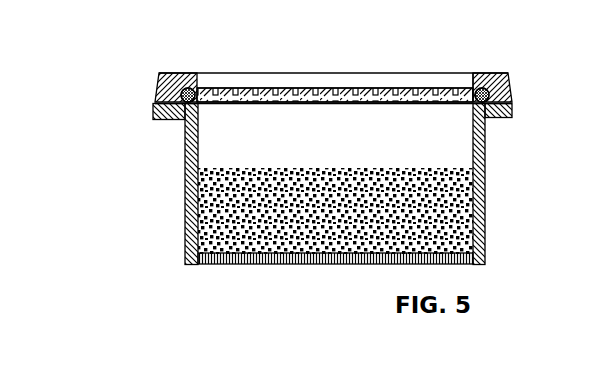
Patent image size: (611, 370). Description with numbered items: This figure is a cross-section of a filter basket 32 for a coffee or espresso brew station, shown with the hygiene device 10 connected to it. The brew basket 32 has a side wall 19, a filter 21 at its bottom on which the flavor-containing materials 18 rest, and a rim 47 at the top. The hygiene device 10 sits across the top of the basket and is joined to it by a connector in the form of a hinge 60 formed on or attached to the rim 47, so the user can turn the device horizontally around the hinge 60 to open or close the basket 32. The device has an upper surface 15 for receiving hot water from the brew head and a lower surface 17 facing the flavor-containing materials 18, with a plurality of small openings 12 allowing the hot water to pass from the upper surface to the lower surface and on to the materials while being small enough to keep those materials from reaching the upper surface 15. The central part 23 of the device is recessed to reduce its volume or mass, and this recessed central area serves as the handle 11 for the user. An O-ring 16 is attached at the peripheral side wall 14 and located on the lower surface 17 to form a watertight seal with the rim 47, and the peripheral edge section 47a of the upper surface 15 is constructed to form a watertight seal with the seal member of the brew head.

The hygiene device 10 is at (296, 66).
The handle 11 is at (460, 82).
The small openings 12 is at (383, 87).
The peripheral side wall 14 is at (508, 83).
The upper surface 15 is at (260, 88).
The O-ring 16 is at (187, 73).
The lower surface 17 is at (253, 106).
The flavor-containing materials 18 is at (190, 197).
The side wall 19 is at (188, 237).
The filter 21 is at (313, 264).
The central part 23 is at (339, 83).
The brew basket 32 is at (180, 273).
The rim 47 is at (508, 101).
The peripheral edge section 47a is at (486, 91).
The hinge 60 is at (160, 91).